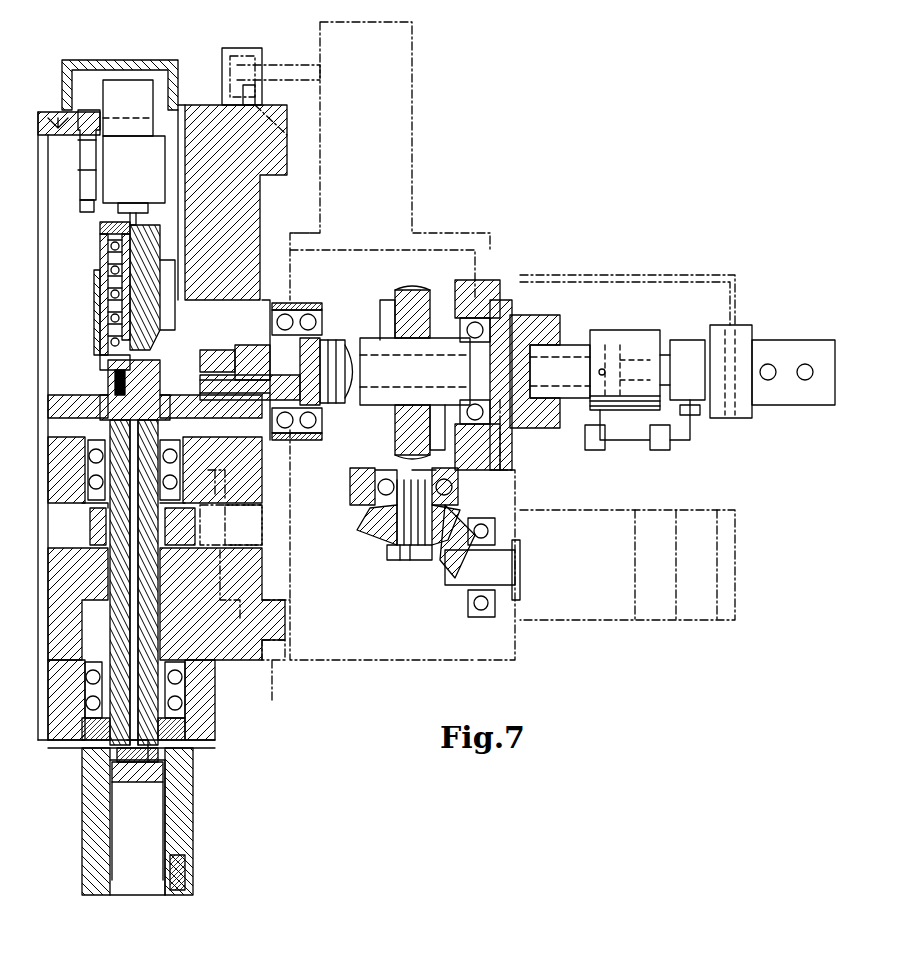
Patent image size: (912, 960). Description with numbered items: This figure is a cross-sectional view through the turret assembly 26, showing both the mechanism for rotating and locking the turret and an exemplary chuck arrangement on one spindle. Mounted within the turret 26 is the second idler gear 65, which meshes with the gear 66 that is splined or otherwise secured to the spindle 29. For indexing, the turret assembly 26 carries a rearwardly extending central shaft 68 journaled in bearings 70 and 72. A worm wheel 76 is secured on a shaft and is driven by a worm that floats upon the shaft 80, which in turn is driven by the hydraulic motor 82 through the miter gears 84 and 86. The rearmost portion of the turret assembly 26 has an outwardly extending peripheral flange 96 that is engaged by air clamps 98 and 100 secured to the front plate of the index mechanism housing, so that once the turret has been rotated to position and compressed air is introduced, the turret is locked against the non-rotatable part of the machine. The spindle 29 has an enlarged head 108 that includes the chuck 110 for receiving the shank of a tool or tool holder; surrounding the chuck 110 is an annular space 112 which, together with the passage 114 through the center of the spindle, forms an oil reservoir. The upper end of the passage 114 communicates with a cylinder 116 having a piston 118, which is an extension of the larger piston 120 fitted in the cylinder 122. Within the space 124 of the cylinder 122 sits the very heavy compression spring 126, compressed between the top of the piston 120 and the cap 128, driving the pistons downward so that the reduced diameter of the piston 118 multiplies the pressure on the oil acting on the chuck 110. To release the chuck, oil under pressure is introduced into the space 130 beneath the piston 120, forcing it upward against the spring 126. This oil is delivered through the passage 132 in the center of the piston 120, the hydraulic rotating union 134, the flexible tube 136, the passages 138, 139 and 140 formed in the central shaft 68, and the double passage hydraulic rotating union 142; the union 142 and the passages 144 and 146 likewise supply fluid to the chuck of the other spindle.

The turret assembly 26 is at (222, 752).
The spindle 29 is at (158, 625).
The second idler gear 65 is at (247, 520).
The gear 66 is at (92, 530).
The central shaft 68 is at (315, 430).
The bearing 70 is at (290, 442).
The bearing 72 is at (462, 428).
The worm wheel 76 is at (430, 290).
The shaft 80 is at (405, 490).
The hydraulic motor 82 is at (600, 605).
The miter gear 84 is at (445, 605).
The miter gear 86 is at (380, 530).
The peripheral flange 96 is at (252, 88).
The air clamp 98 is at (228, 52).
The air clamp 100 is at (275, 700).
The enlarged head 108 is at (194, 860).
The chuck 110 is at (148, 850).
The annular space 112 is at (168, 838).
The passage 114 is at (100, 748).
The cylinder 116 is at (110, 398).
The piston 118 is at (112, 382).
The piston 120 is at (108, 345).
The cylinder 122 is at (110, 326).
The space 124 is at (112, 272).
The compression spring 126 is at (104, 250).
The cap 128 is at (100, 225).
The space 130 is at (108, 362).
The passage 132 is at (98, 296).
The hydraulic rotating union 134 is at (122, 125).
The flexible tube 136 is at (80, 150).
The passage 138 is at (260, 310).
The passage 139 is at (245, 330).
The passage 140 is at (335, 345).
The double passage hydraulic rotating union 142 is at (778, 352).
The passage 144 is at (625, 455).
The passage 146 is at (528, 380).